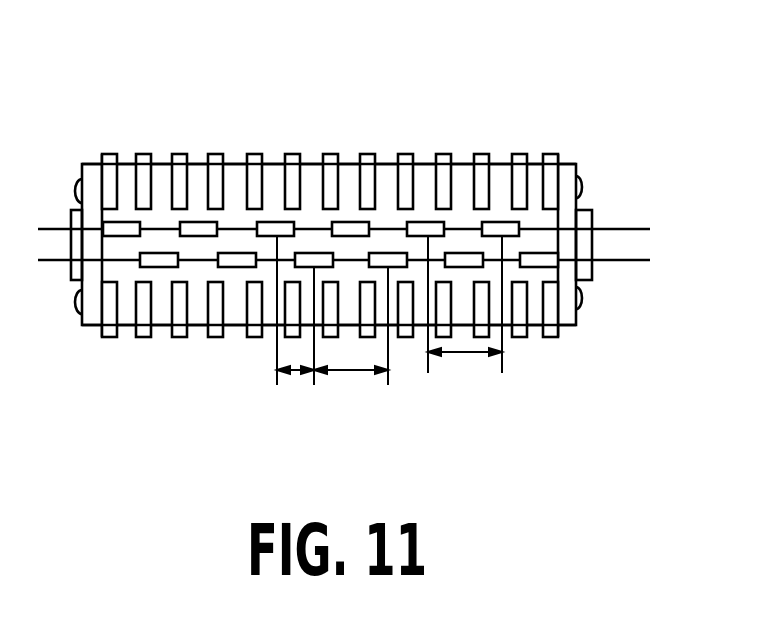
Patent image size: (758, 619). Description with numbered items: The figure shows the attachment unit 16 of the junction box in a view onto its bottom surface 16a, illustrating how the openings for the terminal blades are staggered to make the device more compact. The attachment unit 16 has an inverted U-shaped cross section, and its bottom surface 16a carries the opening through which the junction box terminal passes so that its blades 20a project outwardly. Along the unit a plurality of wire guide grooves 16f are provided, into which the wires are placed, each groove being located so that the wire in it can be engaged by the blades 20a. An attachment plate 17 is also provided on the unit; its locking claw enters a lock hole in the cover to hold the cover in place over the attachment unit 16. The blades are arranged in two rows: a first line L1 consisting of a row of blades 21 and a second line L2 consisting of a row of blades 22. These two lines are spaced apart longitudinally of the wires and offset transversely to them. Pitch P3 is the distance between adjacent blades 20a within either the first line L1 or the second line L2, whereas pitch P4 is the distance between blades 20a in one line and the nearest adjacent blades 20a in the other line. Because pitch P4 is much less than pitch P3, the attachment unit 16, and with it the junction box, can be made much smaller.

The attachment unit 16 is at (368, 223).
The bottom surface 16a is at (540, 218).
The wire guide grooves 16f is at (125, 162).
The attachment plate 17 is at (94, 316).
The blades 20a is at (330, 155).
The blades 21 is at (115, 226).
The blades 22 is at (143, 263).
The first line L1 is at (632, 228).
The second line L2 is at (625, 262).
The pitch P3 is at (408, 327).
The pitch P4 is at (299, 336).